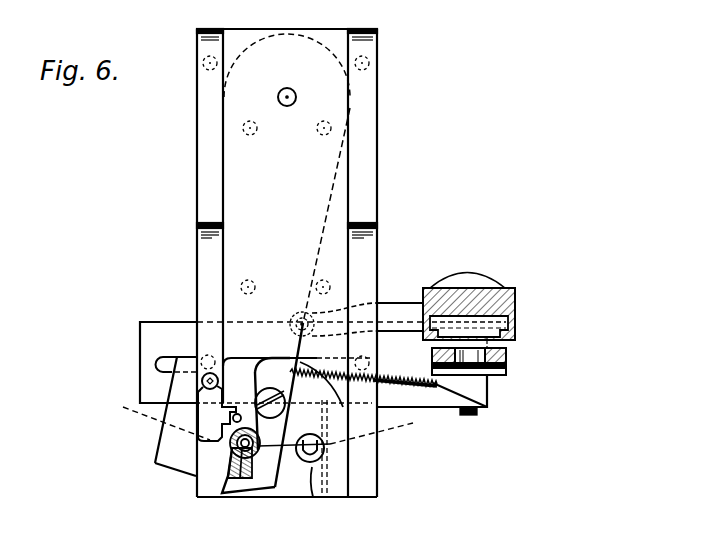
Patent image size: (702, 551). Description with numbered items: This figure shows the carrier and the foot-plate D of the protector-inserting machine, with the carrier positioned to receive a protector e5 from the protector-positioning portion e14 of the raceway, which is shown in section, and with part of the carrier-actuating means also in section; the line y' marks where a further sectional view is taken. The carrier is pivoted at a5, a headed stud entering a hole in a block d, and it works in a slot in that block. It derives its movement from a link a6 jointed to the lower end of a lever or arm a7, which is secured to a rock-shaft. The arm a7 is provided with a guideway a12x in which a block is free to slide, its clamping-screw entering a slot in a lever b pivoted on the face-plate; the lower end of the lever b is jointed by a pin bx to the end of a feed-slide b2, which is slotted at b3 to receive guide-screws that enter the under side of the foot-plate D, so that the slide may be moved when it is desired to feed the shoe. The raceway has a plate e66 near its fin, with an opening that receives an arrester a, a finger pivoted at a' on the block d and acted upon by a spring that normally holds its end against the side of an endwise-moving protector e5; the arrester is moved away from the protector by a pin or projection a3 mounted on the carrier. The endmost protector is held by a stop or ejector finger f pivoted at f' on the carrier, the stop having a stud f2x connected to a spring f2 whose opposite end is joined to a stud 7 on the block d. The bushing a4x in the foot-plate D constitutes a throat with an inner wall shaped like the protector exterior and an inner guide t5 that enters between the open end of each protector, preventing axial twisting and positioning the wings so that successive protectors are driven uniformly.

The block d is at (197, 177).
The carrier pivot a5 is at (296, 97).
The stud of the stop f2x is at (265, 360).
The link a6 is at (403, 302).
The lever or arm a7 is at (515, 292).
The guideway a12x is at (437, 340).
The lever b is at (507, 360).
The feed-slide b2 is at (147, 329).
The stud 7 is at (482, 409).
The pin bx is at (472, 416).
The slot of the feed-slide b3 is at (160, 360).
The foot-plate D is at (270, 443).
The arrester a is at (176, 416).
The arrester pivot a' is at (189, 407).
The pin or projection a3 is at (242, 410).
The spring f2 is at (392, 373).
The stop or ejector f is at (282, 425).
The stop pivot f' is at (286, 400).
The protector e5 is at (232, 437).
The plate e66 is at (225, 465).
The protector-positioning portion e14 is at (198, 493).
The bushing a4x is at (330, 455).
The inner guide t5 is at (302, 478).
The section line y' is at (264, 423).